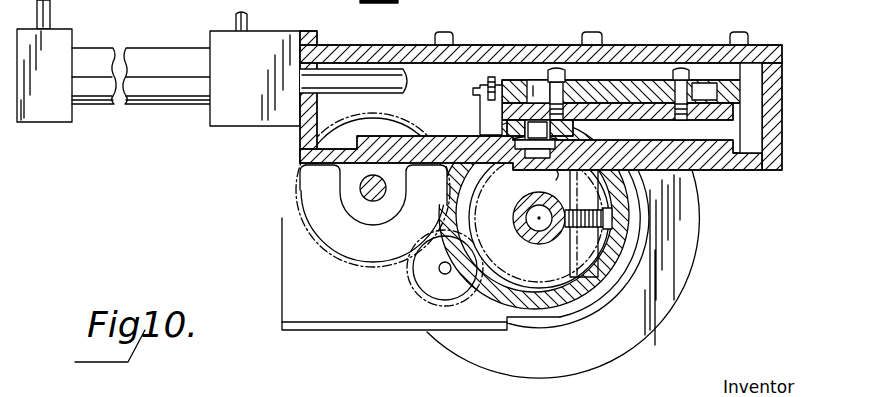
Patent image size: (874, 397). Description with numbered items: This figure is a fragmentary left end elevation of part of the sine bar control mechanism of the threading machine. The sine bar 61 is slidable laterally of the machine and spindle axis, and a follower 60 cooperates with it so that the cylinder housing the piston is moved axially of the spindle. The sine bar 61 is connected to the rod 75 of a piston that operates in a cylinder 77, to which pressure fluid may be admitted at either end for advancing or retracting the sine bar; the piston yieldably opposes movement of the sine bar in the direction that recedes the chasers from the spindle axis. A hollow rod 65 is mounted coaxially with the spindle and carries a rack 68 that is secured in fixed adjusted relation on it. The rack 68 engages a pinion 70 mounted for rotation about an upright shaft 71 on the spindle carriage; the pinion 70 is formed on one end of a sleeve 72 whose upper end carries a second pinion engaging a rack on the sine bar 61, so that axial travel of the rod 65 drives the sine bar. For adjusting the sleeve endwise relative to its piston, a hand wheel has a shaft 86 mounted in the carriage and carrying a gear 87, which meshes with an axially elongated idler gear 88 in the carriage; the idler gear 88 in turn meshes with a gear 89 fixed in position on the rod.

The follower 60 is at (494, 132).
The sine bar 61 is at (737, 115).
The hollow rod 65 is at (532, 248).
The rack 68 is at (531, 154).
The pinion 70 is at (612, 217).
The upright shaft 71 is at (630, 250).
The sleeve 72 is at (625, 172).
The rod 75 is at (409, 87).
The cylinder 77 is at (115, 49).
The shaft 86 is at (367, 195).
The gear 87 is at (299, 214).
The idler gear 88 is at (408, 284).
The gear 89 is at (517, 290).